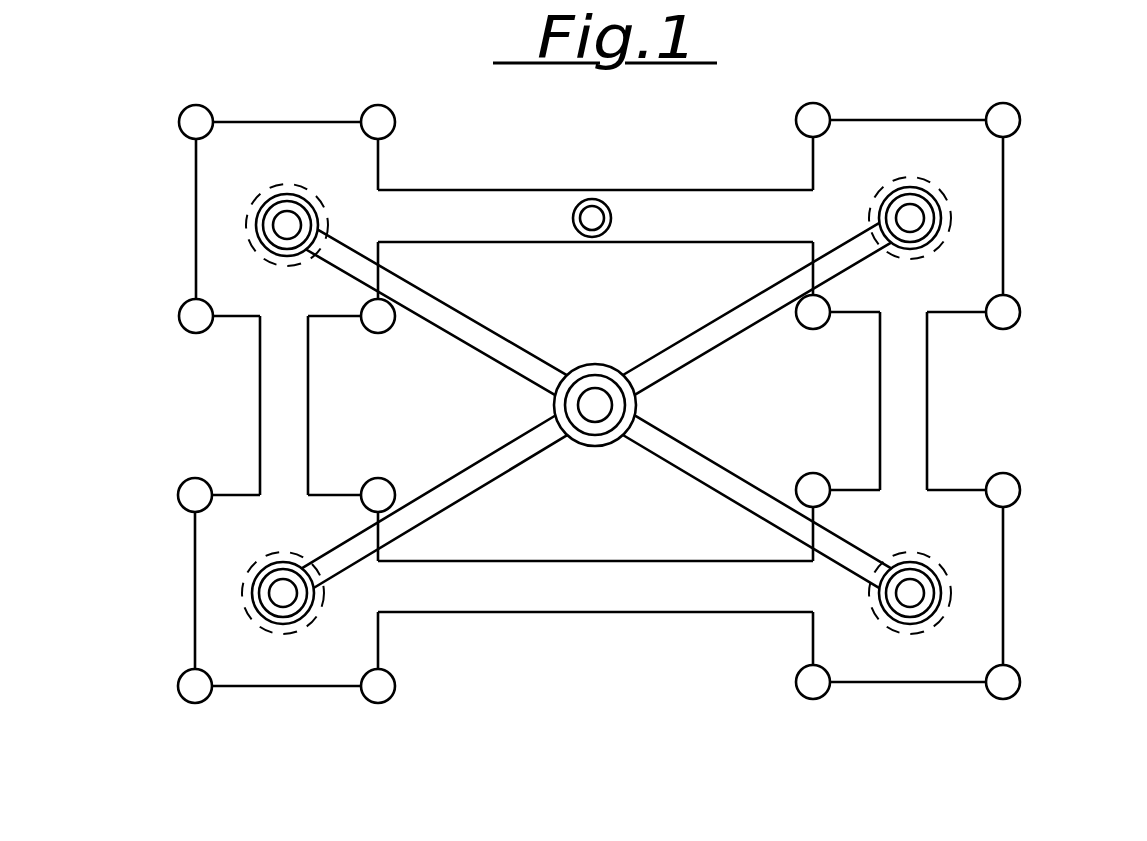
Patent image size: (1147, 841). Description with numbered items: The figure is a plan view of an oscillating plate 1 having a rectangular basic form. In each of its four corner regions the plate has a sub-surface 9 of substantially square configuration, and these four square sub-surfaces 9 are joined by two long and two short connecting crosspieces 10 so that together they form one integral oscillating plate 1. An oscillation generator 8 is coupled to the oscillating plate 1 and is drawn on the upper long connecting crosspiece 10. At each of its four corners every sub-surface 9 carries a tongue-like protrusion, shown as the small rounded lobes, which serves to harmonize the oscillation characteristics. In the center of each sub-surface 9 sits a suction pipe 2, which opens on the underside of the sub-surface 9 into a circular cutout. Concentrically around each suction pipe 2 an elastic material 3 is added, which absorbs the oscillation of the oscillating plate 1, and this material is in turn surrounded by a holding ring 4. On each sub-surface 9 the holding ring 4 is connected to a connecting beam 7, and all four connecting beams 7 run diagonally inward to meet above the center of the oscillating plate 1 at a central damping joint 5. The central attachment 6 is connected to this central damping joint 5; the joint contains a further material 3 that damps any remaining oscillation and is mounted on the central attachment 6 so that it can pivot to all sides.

The oscillating plate 1 is at (873, 133).
The suction pipe 2 is at (910, 593).
The elastic material 3 is at (927, 595).
The holding ring 4 is at (890, 613).
The central damping joint 5 is at (597, 447).
The central attachment 6 is at (595, 410).
The connecting beam 7 is at (493, 360).
The oscillation generator 8 is at (575, 207).
The sub-surface 9 is at (978, 198).
The connecting crosspiece 10 is at (260, 358).